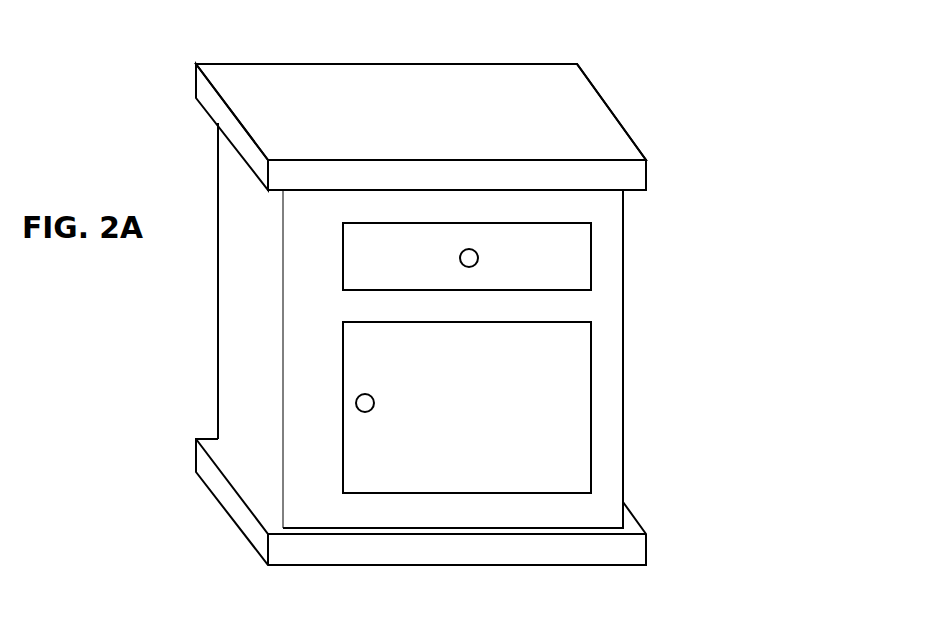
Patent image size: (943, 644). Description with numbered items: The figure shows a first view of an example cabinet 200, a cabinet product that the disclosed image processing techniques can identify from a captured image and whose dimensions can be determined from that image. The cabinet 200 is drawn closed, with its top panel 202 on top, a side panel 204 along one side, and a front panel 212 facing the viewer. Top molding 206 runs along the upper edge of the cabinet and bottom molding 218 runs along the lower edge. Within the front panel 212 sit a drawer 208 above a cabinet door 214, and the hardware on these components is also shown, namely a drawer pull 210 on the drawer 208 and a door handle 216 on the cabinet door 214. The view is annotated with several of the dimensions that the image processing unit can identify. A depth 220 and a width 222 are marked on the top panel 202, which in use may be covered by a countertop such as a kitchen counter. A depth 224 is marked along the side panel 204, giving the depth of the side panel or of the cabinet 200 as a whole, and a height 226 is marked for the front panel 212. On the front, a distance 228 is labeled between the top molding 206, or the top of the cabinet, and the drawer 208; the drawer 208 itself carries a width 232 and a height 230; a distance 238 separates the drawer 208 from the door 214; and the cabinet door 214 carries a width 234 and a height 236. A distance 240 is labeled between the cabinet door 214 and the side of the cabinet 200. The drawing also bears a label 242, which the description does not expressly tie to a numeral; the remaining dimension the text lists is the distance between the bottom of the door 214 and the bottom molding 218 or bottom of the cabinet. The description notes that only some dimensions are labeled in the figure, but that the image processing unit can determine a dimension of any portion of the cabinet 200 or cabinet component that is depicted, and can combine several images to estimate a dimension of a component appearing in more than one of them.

The cabinet 200 is at (541, 64).
The top panel 202 is at (242, 97).
The side panel 204 is at (260, 297).
The top molding 206 is at (638, 172).
The drawer 208 is at (592, 233).
The drawer pull 210 is at (463, 252).
The front panel 212 is at (618, 271).
The cabinet door 214 is at (592, 336).
The door handle 216 is at (372, 396).
The bottom molding 218 is at (638, 548).
The depth 220 is at (340, 68).
The width 222 is at (623, 135).
The depth 224 is at (283, 287).
The height 226 is at (298, 528).
The distance 228 is at (503, 190).
The height 230 is at (519, 290).
The width 232 is at (591, 277).
The width 234 is at (591, 353).
The height 236 is at (519, 322).
The distance 238 is at (503, 290).
The distance 240 is at (623, 457).
The bottom margin 242 is at (503, 493).